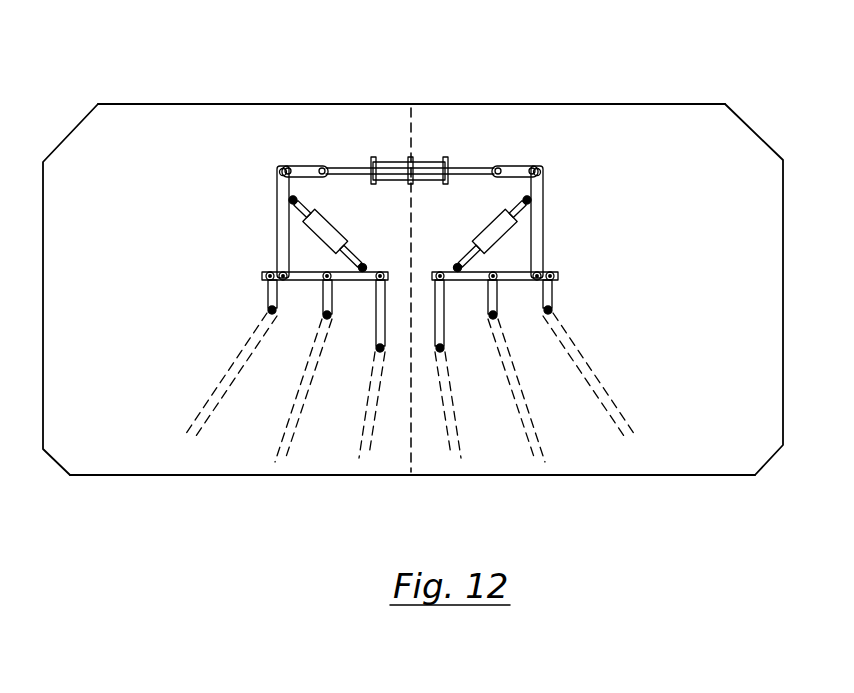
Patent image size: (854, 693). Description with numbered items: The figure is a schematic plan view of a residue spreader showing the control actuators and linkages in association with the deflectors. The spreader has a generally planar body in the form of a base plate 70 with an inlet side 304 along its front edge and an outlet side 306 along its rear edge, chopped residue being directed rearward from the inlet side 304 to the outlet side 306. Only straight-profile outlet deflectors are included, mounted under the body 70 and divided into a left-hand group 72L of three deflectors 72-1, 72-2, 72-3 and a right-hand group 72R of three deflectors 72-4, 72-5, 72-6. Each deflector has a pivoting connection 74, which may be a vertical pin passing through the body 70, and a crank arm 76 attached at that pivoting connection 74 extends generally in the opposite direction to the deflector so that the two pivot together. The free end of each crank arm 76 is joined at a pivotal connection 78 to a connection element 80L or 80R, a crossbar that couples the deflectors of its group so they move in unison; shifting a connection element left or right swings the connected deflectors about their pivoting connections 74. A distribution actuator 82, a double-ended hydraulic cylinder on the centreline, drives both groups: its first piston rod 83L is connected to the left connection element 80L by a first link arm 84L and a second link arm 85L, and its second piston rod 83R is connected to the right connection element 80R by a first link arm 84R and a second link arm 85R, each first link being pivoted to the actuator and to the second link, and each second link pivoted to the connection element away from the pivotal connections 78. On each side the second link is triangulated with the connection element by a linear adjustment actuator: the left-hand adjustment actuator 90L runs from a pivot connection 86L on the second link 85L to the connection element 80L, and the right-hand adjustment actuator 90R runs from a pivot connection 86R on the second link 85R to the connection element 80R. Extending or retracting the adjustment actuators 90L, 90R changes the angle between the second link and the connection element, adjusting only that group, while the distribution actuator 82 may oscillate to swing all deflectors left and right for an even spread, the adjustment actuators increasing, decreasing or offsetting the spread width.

The base plate 70 is at (118, 462).
The inlet side 304 is at (621, 103).
The outlet side 306 is at (646, 475).
The distribution actuator 82 is at (433, 150).
The first piston rod 83L is at (337, 167).
The second piston rod 83R is at (485, 167).
The first link arm 84L is at (296, 169).
The first link arm 84R is at (530, 166).
The second link arm 85L is at (277, 213).
The second link arm 85R is at (543, 213).
The pivot connection 86L is at (285, 190).
The pivot connection 86R is at (535, 190).
The left-hand adjustment actuator 90L is at (340, 222).
The right-hand adjustment actuator 90R is at (485, 226).
The connection element 80L is at (322, 271).
The connection element 80R is at (518, 277).
The pivotal connection 78 is at (269, 270).
The crank arm 76 is at (279, 298).
The pivoting connection 74 is at (322, 318).
The left-hand group of outlet deflectors 72L is at (272, 413).
The right-hand group of outlet deflectors 72R is at (555, 412).
The outlet deflector 72-1 is at (230, 362).
The outlet deflector 72-2 is at (283, 428).
The outlet deflector 72-3 is at (351, 405).
The outlet deflector 72-4 is at (460, 446).
The outlet deflector 72-5 is at (535, 430).
The outlet deflector 72-6 is at (609, 374).